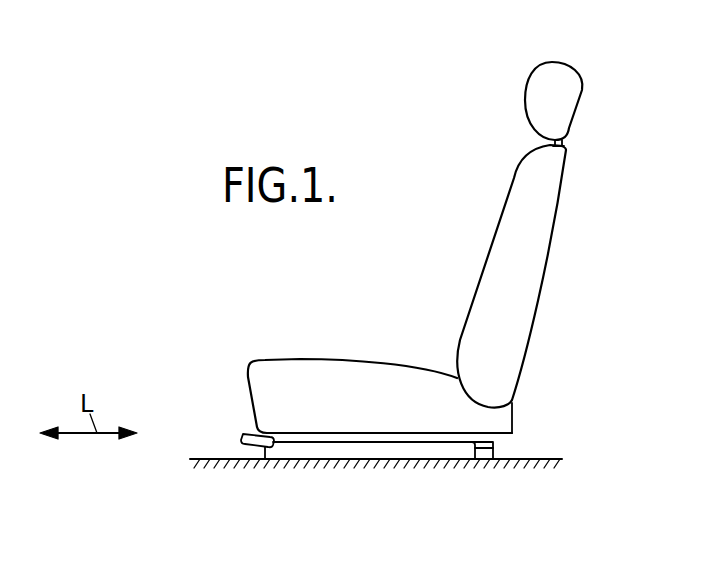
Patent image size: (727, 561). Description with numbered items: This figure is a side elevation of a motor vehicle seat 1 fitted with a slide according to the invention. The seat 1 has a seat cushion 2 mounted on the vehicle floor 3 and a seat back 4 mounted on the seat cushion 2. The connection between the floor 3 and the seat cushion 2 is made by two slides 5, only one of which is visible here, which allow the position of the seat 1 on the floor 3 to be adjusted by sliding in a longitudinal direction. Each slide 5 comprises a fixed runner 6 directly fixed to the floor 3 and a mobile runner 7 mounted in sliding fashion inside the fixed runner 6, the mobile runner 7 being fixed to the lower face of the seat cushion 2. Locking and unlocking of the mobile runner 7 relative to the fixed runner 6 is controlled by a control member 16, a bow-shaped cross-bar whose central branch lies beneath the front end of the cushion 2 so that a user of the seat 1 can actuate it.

The seat 1 is at (412, 343).
The seat cushion 2 is at (282, 377).
The vehicle floor 3 is at (200, 457).
The seat back 4 is at (533, 268).
The slide 5 is at (512, 439).
The fixed runner 6 is at (435, 448).
The mobile runner 7 is at (490, 453).
The control member 16 is at (248, 445).